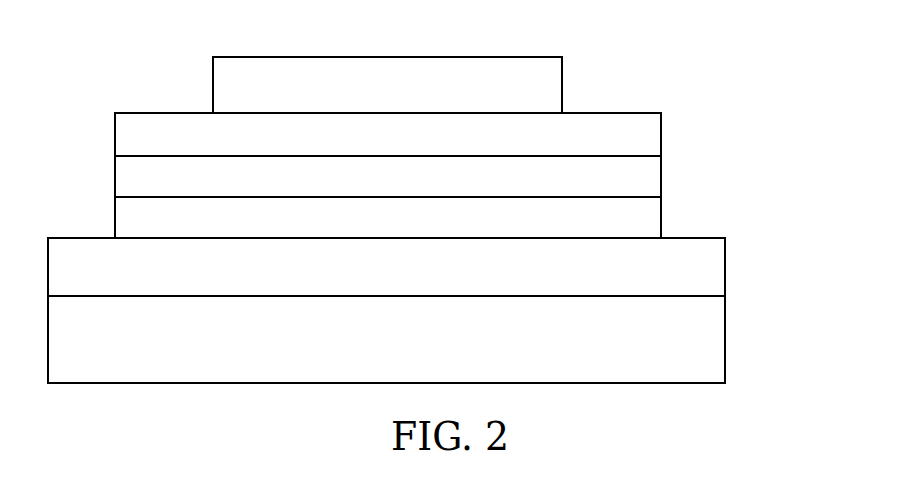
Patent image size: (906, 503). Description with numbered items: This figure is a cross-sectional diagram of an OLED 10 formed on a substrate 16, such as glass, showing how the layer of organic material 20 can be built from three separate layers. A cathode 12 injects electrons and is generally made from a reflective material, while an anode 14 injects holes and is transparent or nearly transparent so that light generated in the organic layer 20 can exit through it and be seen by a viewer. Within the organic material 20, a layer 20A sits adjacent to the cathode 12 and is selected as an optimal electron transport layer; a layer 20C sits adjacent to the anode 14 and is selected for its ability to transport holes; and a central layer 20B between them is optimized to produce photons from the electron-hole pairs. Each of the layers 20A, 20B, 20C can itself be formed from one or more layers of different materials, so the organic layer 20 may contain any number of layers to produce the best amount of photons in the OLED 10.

The OLED 10 is at (124, 48).
The cathode 12 is at (562, 86).
The anode 14 is at (725, 268).
The substrate 16 is at (725, 345).
The layer of organic material 20 is at (755, 113).
The electron transport layer 20A is at (727, 106).
The central layer 20B is at (662, 178).
The hole transport layer 20C is at (742, 207).